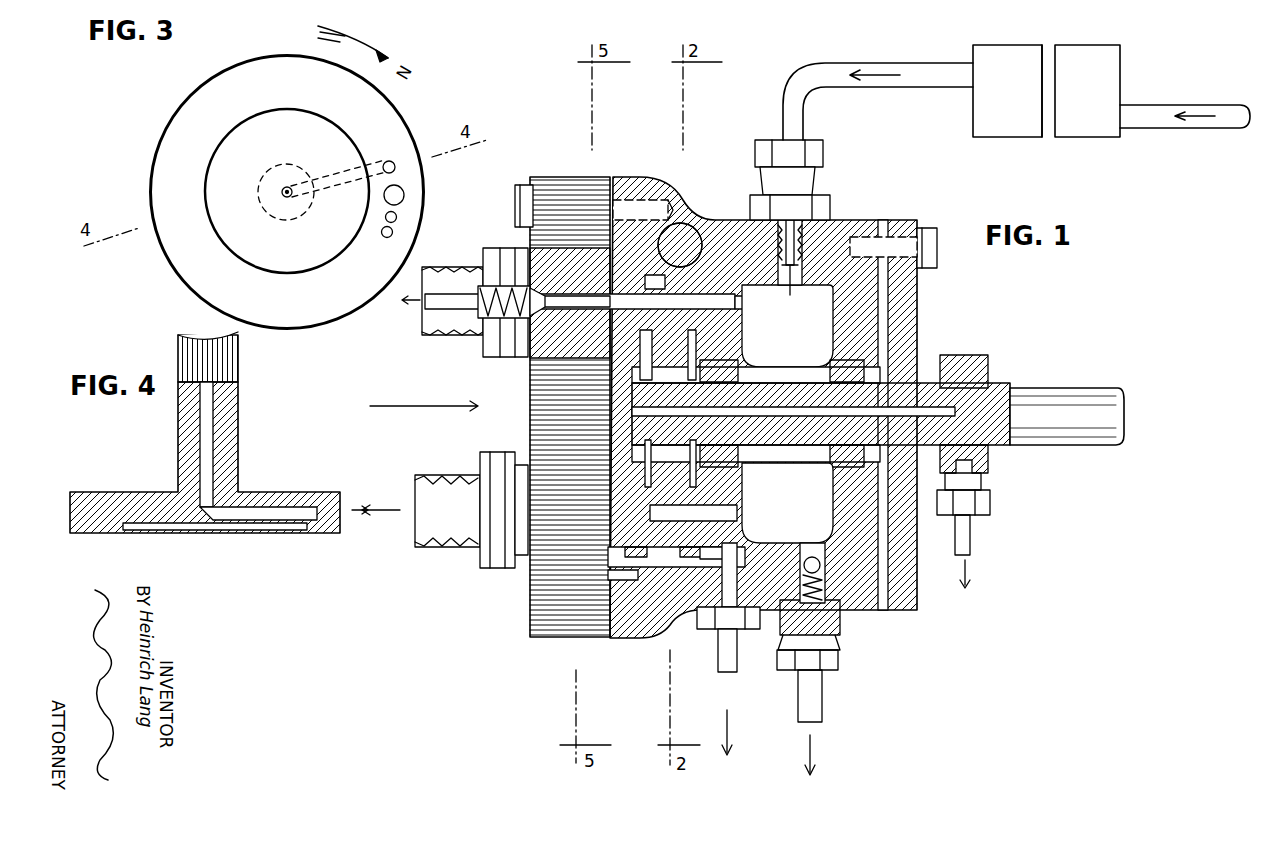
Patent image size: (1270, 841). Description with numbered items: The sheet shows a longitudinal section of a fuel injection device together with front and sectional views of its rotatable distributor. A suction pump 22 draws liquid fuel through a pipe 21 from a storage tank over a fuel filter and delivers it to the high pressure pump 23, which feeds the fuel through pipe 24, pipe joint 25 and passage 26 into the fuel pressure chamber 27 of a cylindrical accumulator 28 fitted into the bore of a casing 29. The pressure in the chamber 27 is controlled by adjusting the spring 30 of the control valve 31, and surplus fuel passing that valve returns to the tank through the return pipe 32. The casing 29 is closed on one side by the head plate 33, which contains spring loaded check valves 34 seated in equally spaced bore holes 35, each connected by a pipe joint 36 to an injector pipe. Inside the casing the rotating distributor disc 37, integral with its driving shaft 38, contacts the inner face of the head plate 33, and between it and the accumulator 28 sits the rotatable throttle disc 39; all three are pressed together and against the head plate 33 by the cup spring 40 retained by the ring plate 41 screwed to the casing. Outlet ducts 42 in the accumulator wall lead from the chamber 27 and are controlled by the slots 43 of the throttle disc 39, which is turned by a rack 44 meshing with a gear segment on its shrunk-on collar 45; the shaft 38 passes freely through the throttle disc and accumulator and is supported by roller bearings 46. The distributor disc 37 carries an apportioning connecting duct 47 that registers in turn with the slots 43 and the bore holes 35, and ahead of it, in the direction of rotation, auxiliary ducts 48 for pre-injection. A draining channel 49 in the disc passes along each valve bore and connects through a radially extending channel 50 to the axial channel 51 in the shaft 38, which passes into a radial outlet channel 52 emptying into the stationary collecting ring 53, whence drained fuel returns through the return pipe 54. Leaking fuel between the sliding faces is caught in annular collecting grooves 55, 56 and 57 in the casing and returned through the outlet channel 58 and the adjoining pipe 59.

In FIG. 1, the pipe 21 is at (1200, 120).
In FIG. 1, the suction pump 22 is at (1078, 68).
In FIG. 1, the high pressure pump 23 is at (1010, 68).
In FIG. 1, the pipe 24 is at (832, 82).
In FIG. 1, the pipe joint 25 is at (830, 208).
In FIG. 1, the passage 26 is at (790, 275).
In FIG. 1, the fuel pressure chamber 27 is at (787, 326).
In FIG. 1, the accumulator 28 is at (853, 338).
In FIG. 1, the casing 29 is at (580, 650).
In FIG. 1, the spring 30 is at (838, 648).
In FIG. 1, the control valve 31 is at (838, 610).
In FIG. 1, the return pipe 32 is at (820, 705).
In FIG. 1, the head plate 33 is at (528, 618).
In FIG. 1, the check valve 34 is at (575, 295).
In FIG. 1, the bore hole 35 is at (500, 345).
In FIG. 1, the pipe joint 36 is at (430, 300).
In FIG. 3, the distributor disc 37 is at (185, 125).
In FIG. 4, the distributor disc 37 is at (108, 505).
In FIG. 1, the distributor disc 37 is at (610, 530).
In FIG. 4, the driving shaft 38 is at (222, 460).
In FIG. 1, the driving shaft 38 is at (1060, 430).
In FIG. 1, the throttle disc 39 is at (660, 352).
In FIG. 1, the cup spring 40 is at (890, 608).
In FIG. 1, the ring plate 41 is at (906, 590).
In FIG. 1, the outlet duct 42 is at (734, 290).
In FIG. 1, the slot 43 is at (690, 230).
In FIG. 1, the rack 44 is at (680, 190).
In FIG. 1, the shrunk-on collar 45 is at (690, 560).
In FIG. 1, the roller bearing 46 is at (770, 470).
In FIG. 3, the apportioning connecting duct 47 is at (403, 200).
In FIG. 1, the apportioning connecting duct 47 is at (640, 278).
In FIG. 3, the auxiliary duct 48 is at (392, 232).
In FIG. 3, the draining channel 49 is at (394, 161).
In FIG. 4, the draining channel 49 is at (312, 527).
In FIG. 3, the radially extending channel 50 is at (333, 181).
In FIG. 4, the radially extending channel 50 is at (214, 515).
In FIG. 1, the radially extending channel 50 is at (632, 400).
In FIG. 4, the axial channel 51 is at (190, 437).
In FIG. 1, the axial channel 51 is at (880, 372).
In FIG. 1, the radial outlet channel 52 is at (985, 448).
In FIG. 1, the collecting ring 53 is at (965, 362).
In FIG. 1, the return pipe 54 is at (972, 540).
In FIG. 1, the annular collecting groove 55 is at (600, 585).
In FIG. 1, the annular collecting groove 56 is at (614, 622).
In FIG. 1, the annular collecting groove 57 is at (690, 615).
In FIG. 1, the outlet channel 58 is at (668, 595).
In FIG. 1, the pipe 59 is at (738, 672).